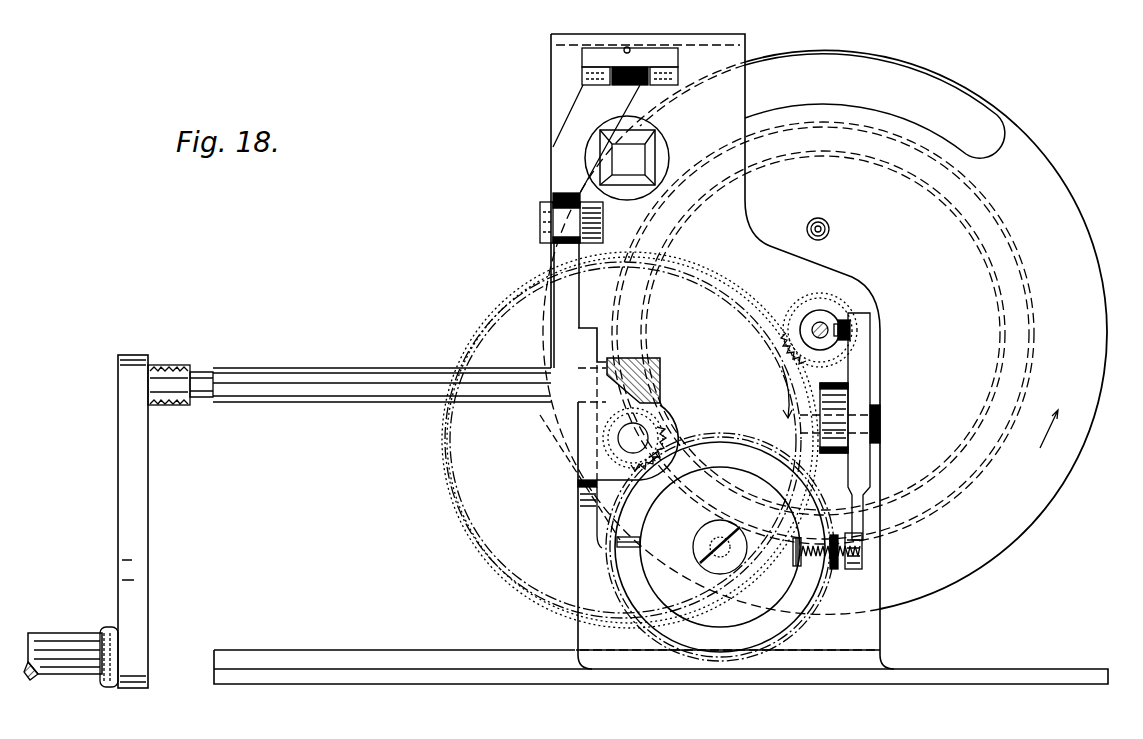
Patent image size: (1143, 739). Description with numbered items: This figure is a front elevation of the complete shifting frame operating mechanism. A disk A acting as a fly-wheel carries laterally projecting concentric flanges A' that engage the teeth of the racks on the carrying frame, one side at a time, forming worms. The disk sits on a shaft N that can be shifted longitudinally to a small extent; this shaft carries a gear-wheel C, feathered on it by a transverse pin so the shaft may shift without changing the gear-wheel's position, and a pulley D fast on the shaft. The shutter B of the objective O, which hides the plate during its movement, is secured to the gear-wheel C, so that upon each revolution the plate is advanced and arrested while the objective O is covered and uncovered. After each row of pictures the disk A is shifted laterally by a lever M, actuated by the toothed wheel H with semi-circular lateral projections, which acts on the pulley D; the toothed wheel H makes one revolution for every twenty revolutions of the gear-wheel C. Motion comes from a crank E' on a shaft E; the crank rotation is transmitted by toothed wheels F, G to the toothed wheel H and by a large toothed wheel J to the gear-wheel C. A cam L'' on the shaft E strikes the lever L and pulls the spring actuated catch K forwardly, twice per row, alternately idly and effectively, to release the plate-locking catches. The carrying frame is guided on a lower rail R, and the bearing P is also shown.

The disk A is at (877, 275).
The concentric flanges A' is at (834, 333).
The shutter B is at (825, 332).
The gear-wheel C is at (792, 313).
The pulley D is at (829, 314).
The shaft E is at (349, 395).
The crank E' is at (100, 521).
The toothed wheel F is at (670, 360).
The toothed wheel G is at (667, 413).
The toothed wheel H is at (687, 538).
The large toothed wheel J is at (630, 440).
The spring actuated catch K is at (595, 52).
The lever L is at (554, 280).
The cam L'' is at (558, 481).
The lever M is at (863, 389).
The shaft N is at (800, 338).
The objective O is at (665, 146).
The square bearing P is at (627, 157).
The lower rail R is at (338, 658).